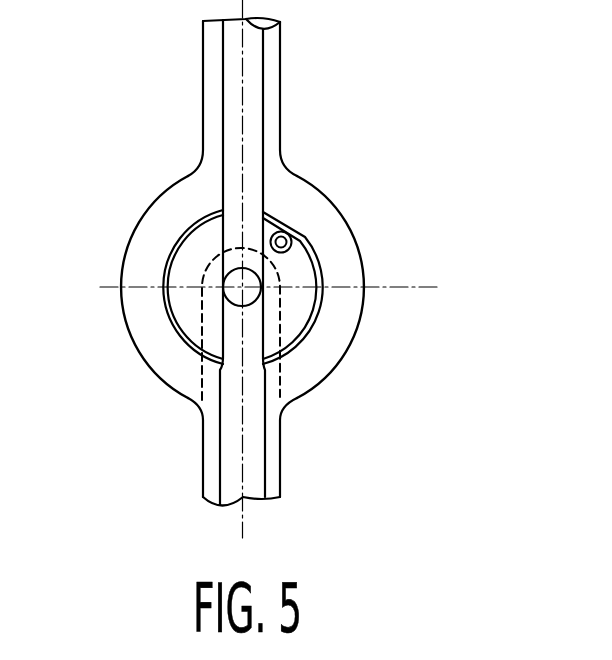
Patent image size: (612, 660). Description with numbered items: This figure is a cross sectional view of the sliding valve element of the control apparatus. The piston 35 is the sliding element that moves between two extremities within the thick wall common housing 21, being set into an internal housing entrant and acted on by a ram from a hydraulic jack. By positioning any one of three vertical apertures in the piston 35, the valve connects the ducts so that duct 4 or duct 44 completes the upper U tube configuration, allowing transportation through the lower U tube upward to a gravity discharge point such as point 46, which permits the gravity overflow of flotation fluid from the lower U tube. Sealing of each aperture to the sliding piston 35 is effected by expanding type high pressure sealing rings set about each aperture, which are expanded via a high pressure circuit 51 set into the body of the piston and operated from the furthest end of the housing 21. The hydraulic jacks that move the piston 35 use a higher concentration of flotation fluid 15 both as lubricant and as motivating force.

The duct 4 is at (255, 90).
The flotation fluid 15 is at (180, 238).
The common housing 21 is at (322, 360).
The piston 35 is at (297, 300).
The duct 44 is at (243, 230).
The gravity discharge point 46 is at (233, 294).
The high pressure circuit 51 is at (302, 237).